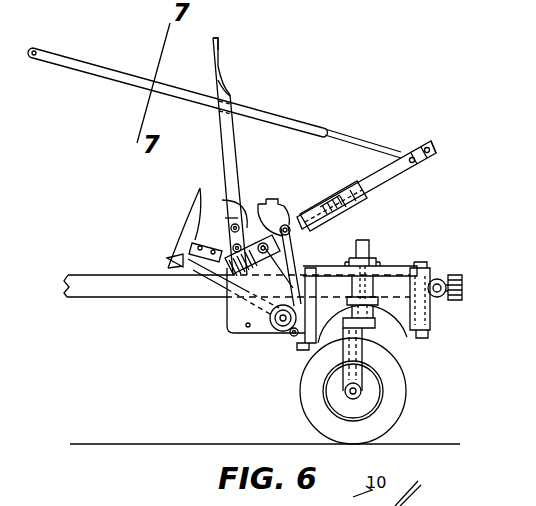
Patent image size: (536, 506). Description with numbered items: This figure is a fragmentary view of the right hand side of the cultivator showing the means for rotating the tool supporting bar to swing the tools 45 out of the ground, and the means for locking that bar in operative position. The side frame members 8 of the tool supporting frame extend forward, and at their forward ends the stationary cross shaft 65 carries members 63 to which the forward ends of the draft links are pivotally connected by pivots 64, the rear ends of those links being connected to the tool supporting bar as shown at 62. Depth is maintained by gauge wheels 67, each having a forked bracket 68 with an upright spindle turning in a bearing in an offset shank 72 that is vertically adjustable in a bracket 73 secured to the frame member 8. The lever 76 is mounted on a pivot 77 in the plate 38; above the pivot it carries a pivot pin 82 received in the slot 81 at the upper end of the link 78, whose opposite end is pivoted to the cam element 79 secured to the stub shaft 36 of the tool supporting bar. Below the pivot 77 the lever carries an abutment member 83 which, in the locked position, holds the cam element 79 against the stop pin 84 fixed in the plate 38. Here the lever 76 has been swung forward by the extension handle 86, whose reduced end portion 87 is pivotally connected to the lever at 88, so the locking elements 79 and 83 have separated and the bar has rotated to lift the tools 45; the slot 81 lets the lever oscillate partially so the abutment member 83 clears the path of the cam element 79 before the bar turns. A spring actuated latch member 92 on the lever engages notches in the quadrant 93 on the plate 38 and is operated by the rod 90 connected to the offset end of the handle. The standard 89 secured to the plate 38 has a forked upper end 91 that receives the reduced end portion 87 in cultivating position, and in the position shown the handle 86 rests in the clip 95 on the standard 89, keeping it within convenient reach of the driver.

The frame members 8 is at (85, 275).
The stub shaft 36 is at (278, 323).
The plate 38 is at (225, 208).
The tools 45 is at (191, 215).
The connection of draft links to tool supporting bar 62 is at (300, 348).
The members 63 is at (444, 278).
The pivots 64 is at (422, 262).
The cross shaft 65 is at (447, 297).
The gauge wheels 67 is at (397, 408).
The forked bracket 68 is at (357, 373).
The offset shanks 72 is at (370, 246).
The brackets 73 is at (377, 259).
The lever 76 is at (375, 184).
The pivot 77 is at (231, 234).
The link 78 is at (298, 252).
The cam element 79 is at (249, 298).
The slot 81 is at (285, 224).
The pivot pin 82 is at (260, 212).
The abutment member 83 is at (177, 258).
The stop pin 84 is at (246, 327).
The extension handle 86 is at (70, 62).
The reduced end portion 87 is at (347, 137).
The pivotal connection of handle to lever 88 is at (437, 157).
The standard 89 is at (228, 158).
The rod 90 is at (331, 190).
The forked upper end 91 is at (217, 37).
The latch member 92 is at (327, 227).
The quadrant 93 is at (270, 206).
The clip 95 is at (228, 89).